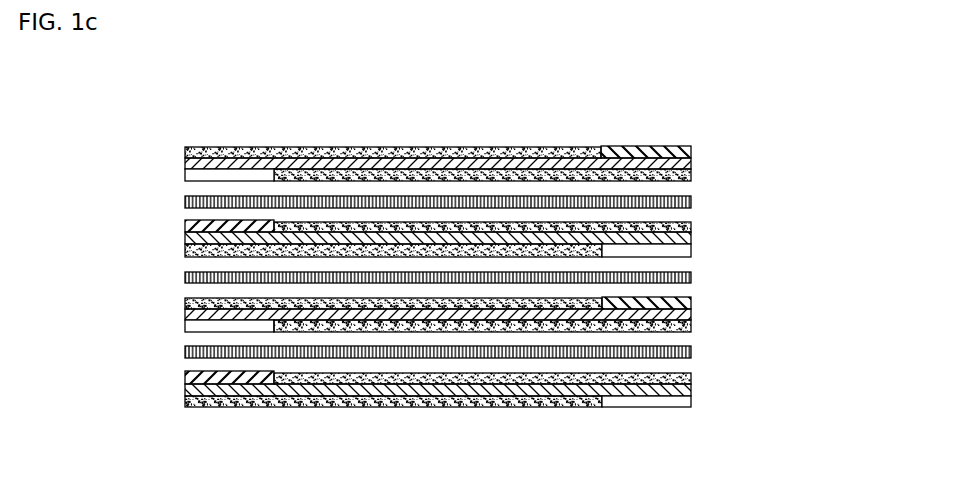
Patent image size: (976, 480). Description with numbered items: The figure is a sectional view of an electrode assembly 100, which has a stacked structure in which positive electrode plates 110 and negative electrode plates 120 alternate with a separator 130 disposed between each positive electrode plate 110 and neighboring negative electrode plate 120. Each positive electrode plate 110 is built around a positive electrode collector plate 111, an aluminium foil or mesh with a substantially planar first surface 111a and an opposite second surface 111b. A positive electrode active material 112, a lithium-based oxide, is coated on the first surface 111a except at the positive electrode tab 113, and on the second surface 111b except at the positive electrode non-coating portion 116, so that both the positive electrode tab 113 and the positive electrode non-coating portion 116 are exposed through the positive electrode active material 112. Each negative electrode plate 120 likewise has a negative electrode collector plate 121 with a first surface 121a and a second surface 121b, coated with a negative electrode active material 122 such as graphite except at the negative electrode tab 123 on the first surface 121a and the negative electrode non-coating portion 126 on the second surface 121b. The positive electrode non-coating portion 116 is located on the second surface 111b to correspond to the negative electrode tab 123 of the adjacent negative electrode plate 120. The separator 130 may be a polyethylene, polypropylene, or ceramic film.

The electrode assembly 100 is at (730, 108).
The positive electrode plate 110 is at (473, 139).
The positive electrode collector plate 111 is at (278, 166).
The first surface 111a is at (333, 157).
The second surface 111b is at (405, 174).
The positive electrode active material 112 is at (438, 139).
The positive electrode tab 113 is at (638, 153).
The positive electrode non-coating portion 116 is at (190, 176).
The negative electrode plate 120 is at (447, 340).
The negative electrode collector plate 121 is at (287, 237).
The first surface 121a is at (353, 231).
The second surface 121b is at (417, 253).
The negative electrode active material 122 is at (438, 341).
The negative electrode tab 123 is at (186, 229).
The negative electrode non-coating portion 126 is at (635, 252).
The separator 130 is at (707, 203).